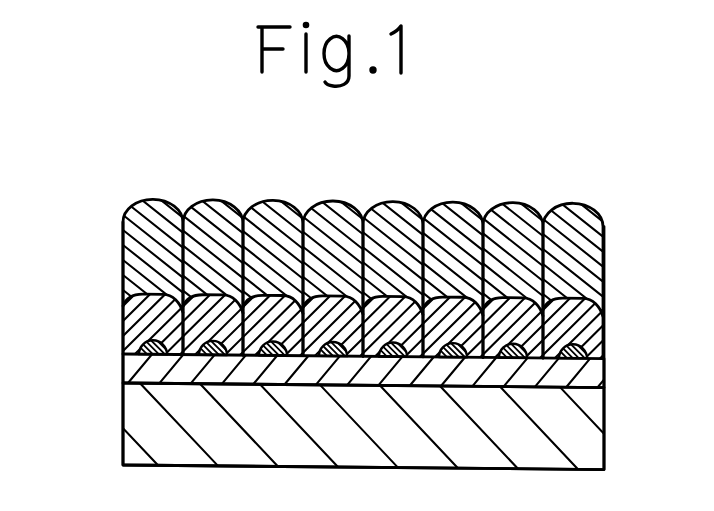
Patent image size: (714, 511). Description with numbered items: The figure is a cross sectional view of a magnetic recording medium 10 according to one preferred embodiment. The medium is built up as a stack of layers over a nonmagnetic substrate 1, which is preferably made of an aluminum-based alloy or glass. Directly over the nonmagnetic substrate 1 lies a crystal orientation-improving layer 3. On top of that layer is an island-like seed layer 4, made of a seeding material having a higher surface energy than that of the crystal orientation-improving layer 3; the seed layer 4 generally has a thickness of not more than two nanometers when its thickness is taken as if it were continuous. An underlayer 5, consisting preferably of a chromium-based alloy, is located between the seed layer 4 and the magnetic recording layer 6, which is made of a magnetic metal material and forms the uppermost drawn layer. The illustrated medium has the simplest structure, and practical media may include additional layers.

The nonmagnetic substrate 1 is at (588, 437).
The crystal orientation-improving layer 3 is at (592, 380).
The island-like seed layer 4 is at (580, 355).
The underlayer 5 is at (588, 327).
The magnetic recording layer 6 is at (588, 263).
The magnetic recording medium 10 is at (96, 194).